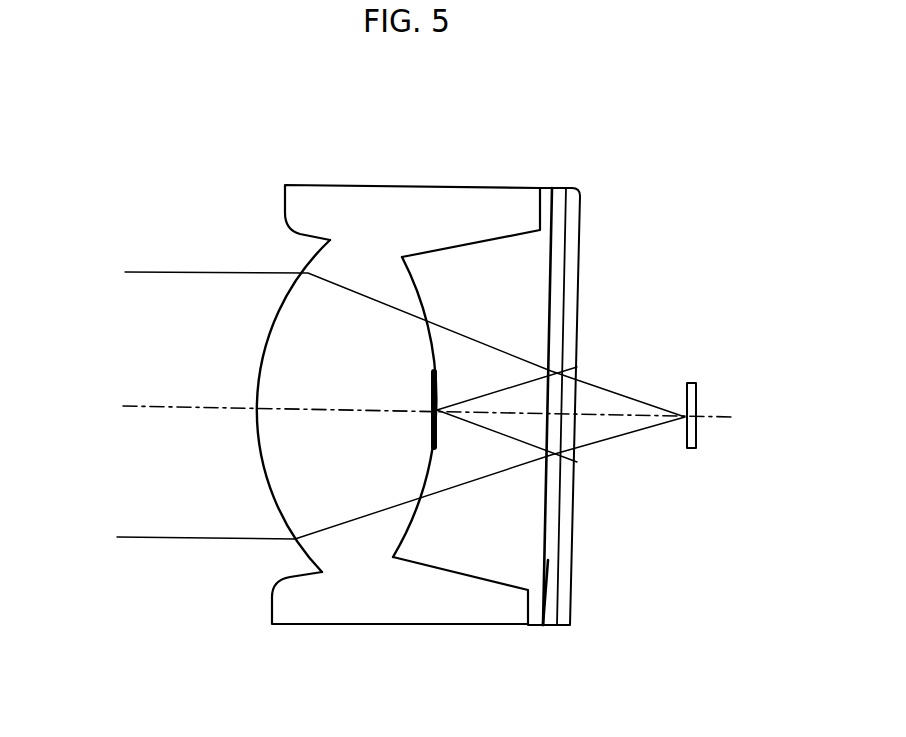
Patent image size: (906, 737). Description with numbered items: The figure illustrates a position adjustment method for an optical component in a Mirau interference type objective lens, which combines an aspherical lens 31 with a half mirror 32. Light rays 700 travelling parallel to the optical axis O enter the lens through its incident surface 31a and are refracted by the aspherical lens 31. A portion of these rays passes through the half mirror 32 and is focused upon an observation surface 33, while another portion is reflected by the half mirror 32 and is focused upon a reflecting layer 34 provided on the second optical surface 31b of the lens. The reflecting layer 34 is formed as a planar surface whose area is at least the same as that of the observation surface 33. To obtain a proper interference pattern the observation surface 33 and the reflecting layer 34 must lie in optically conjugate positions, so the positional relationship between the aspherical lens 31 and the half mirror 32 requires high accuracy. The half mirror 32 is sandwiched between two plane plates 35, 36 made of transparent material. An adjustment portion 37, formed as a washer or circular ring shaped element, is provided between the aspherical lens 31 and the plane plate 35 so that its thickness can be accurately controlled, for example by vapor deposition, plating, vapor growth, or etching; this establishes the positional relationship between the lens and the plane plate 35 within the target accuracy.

The aspherical lens 31 is at (410, 200).
The incident surface 31a is at (273, 500).
The second optical surface 31b is at (408, 530).
The half mirror 32 is at (572, 276).
The observation surface 33 is at (697, 388).
The reflecting layer 34 is at (440, 380).
The plane plate 35 is at (548, 615).
The plane plate 36 is at (572, 203).
The adjustment portion 37 is at (550, 193).
The light rays 700 is at (376, 404).
The optical axis O is at (408, 404).